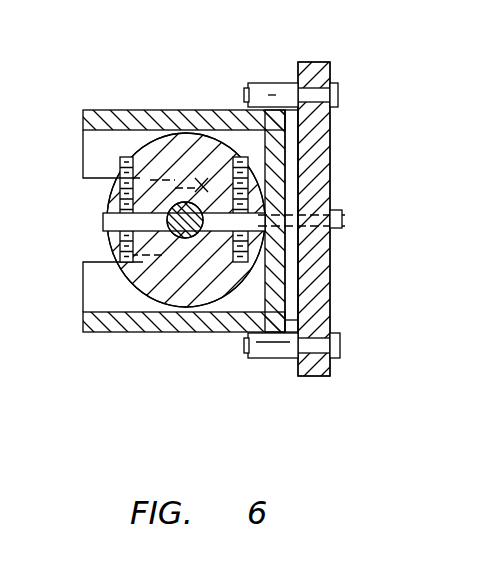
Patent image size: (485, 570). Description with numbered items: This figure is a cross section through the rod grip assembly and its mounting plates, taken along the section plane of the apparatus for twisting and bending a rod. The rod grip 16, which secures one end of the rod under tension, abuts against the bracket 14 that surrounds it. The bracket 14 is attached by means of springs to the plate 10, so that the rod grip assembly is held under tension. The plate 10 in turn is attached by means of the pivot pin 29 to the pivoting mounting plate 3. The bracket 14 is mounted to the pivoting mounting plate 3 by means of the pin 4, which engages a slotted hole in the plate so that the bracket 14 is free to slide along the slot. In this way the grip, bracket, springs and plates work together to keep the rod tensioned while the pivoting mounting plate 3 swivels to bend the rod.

The pivoting mounting plate 3 is at (322, 62).
The pin 4 is at (245, 350).
The plate 10 is at (292, 140).
The bracket 14 is at (118, 110).
The rod grip 16 is at (103, 247).
The pivot pin 29 is at (344, 204).